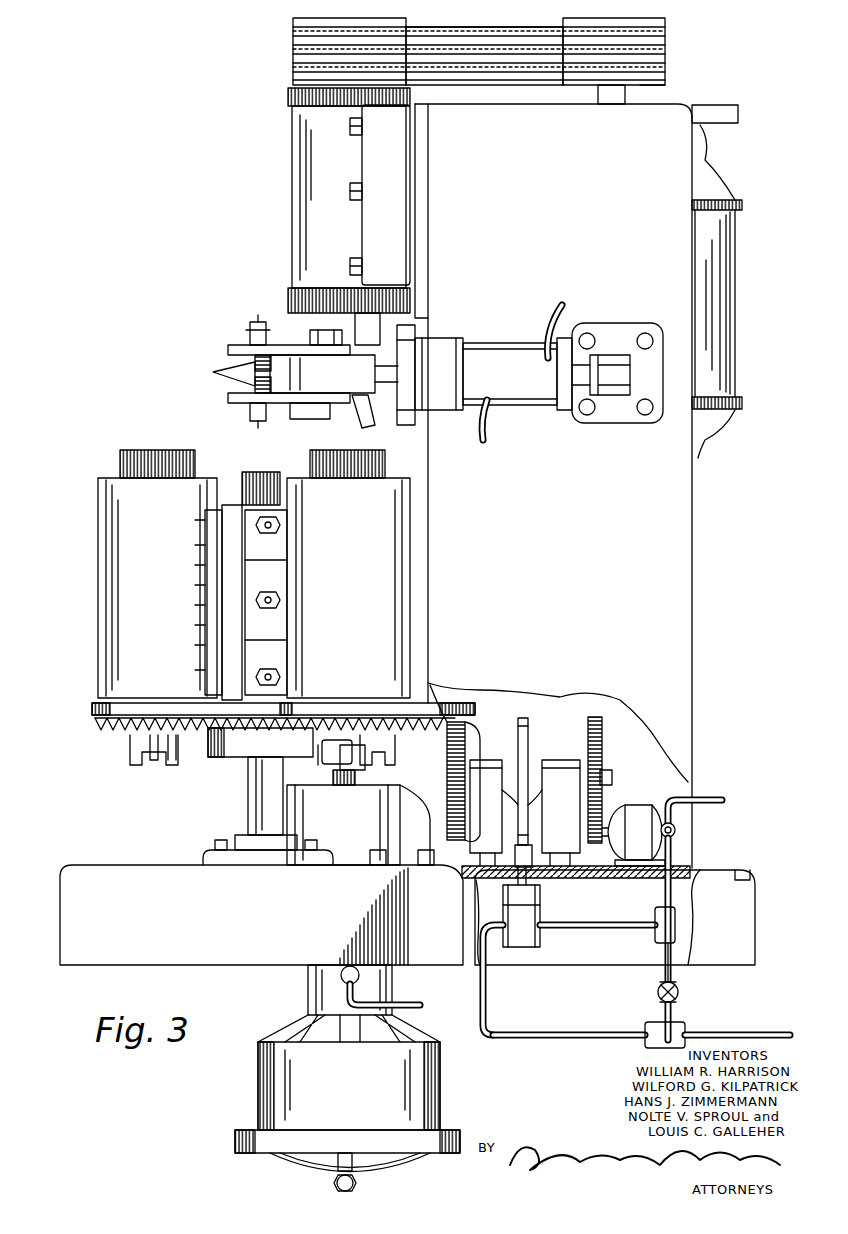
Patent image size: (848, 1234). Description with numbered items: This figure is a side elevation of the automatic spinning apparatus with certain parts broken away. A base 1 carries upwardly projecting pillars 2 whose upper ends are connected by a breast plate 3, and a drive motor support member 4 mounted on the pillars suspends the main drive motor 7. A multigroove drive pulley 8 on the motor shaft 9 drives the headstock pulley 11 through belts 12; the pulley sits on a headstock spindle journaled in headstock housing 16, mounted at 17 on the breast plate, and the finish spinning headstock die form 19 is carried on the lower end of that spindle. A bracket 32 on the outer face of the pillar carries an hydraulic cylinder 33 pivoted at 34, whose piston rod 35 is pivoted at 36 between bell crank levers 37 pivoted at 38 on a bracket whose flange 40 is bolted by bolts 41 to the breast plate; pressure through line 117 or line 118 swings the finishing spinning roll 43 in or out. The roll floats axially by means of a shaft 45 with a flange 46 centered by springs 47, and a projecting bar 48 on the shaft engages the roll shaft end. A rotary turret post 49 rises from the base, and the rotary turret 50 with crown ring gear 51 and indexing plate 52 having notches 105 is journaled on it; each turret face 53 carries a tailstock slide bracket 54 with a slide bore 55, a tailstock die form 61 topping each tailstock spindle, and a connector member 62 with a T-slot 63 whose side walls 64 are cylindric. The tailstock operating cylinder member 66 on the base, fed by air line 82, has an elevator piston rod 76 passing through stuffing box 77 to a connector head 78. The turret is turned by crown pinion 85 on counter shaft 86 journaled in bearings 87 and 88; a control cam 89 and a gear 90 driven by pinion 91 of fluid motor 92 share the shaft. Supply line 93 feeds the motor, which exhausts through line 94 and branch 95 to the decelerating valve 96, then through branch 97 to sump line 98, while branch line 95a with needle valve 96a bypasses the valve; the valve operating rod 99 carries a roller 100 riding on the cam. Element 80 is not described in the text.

The base 1 is at (68, 920).
The pillars 2 is at (692, 548).
The breast plate 3 is at (420, 282).
The drive motor support member 4 is at (738, 115).
The main drive motor 7 is at (728, 290).
The multigroove drive pulley 8 is at (648, 84).
The main drive motor shaft 9 is at (606, 95).
The headstock pulley 11 is at (293, 20).
The belts 12 is at (478, 62).
The headstock housing 16 is at (302, 168).
The headstock housing mounting 17 is at (362, 197).
The finish spinning headstock die form 19 is at (370, 412).
The bracket 32 is at (626, 333).
The hydraulic cylinder 33 is at (512, 345).
The pivot 34 is at (625, 408).
The piston rod 35 is at (432, 356).
The pivot 36 is at (324, 330).
The bell crank levers 37 is at (306, 346).
The pivot 38 is at (318, 419).
The flange 40 is at (406, 425).
The bolts 41 is at (378, 340).
The finishing spinning roll 43 is at (224, 376).
The shaft 45 is at (258, 326).
The flange 46 is at (282, 378).
The springs 47 is at (254, 360).
The projecting bar 48 is at (258, 421).
The rotary turret post 49 is at (262, 800).
The rotary turret 50 is at (232, 752).
The crown ring gear 51 is at (100, 728).
The indexing plate 52 is at (92, 707).
The turret faces 53 is at (250, 548).
The tailstock slide bracket 54 is at (108, 578).
The tailstock slide bore 55 is at (222, 585).
The tailstock die form 61 is at (120, 463).
The connector member 62 is at (130, 750).
The T-slot 63 is at (158, 760).
The T-slot side walls 64 is at (178, 752).
The tailstock operating cylinder member 66 is at (310, 975).
The elevator piston rod 76 is at (345, 785).
The stuffing box 77 is at (360, 825).
The connector head 78 is at (362, 766).
The handle 80 is at (408, 1006).
The common air line 82 is at (356, 1185).
The crown pinion 85 is at (446, 780).
The counter shaft 86 is at (612, 778).
The bearing 87 is at (553, 760).
The bearing 88 is at (480, 760).
The control cam 89 is at (530, 742).
The gear 90 is at (602, 736).
The pinion 91 is at (592, 848).
The fluid motor 92 is at (630, 806).
The hydraulic supply line 93 is at (710, 796).
The exhaust line 94 is at (676, 893).
The branch line 95 is at (600, 928).
The branch line 95a is at (676, 975).
The decelerating valve 96 is at (547, 925).
The needle valve 96a is at (679, 994).
The branch line 97 is at (560, 1032).
The sump return line 98 is at (740, 1032).
The operating rod 99 is at (521, 906).
The roller 100 is at (530, 856).
The peripheral notches 105 is at (293, 706).
The hydraulic line 117 is at (560, 305).
The hydraulic line 118 is at (505, 420).